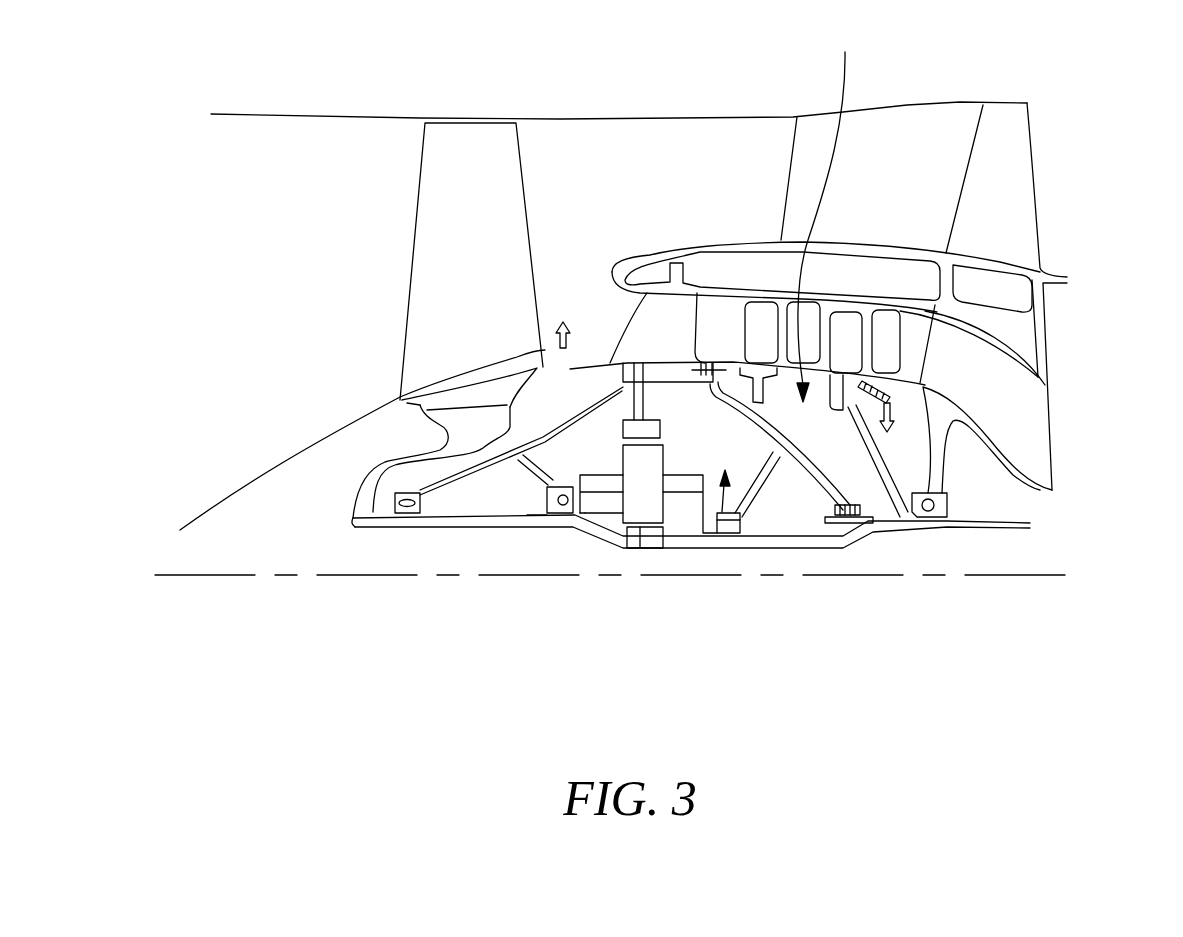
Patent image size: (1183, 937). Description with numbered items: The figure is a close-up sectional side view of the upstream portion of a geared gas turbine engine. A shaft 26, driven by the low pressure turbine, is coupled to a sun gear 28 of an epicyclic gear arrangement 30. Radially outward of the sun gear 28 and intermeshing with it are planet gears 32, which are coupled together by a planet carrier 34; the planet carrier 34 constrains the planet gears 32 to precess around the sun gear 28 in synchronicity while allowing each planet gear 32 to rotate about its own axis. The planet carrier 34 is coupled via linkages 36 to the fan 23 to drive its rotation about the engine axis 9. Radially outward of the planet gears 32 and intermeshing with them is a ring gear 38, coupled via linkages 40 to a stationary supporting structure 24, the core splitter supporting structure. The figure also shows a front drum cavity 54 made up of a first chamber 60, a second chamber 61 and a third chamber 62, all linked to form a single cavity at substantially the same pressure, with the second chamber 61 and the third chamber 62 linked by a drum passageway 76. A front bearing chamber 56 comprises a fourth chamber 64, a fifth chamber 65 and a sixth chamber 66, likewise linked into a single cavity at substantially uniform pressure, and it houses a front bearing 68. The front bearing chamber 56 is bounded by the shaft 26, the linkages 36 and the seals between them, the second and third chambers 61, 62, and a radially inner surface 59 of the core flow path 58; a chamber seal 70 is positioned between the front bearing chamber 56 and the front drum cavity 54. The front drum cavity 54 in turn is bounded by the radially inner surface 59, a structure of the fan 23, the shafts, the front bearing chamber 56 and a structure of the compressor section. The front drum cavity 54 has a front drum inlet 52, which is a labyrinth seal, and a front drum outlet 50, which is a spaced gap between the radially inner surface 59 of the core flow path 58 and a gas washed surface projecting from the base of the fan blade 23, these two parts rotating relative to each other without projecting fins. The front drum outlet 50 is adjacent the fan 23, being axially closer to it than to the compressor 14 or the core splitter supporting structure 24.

The engine axis 9 is at (230, 576).
The compressor 14 is at (843, 327).
The fan 23 is at (420, 253).
The stationary supporting structure 24 is at (650, 323).
The shaft 26 is at (800, 560).
The sun gear 28 is at (650, 537).
The epicyclic gear arrangement 30 is at (607, 527).
The planet gears 32 is at (622, 528).
The planet carrier 34 is at (683, 520).
The linkages 36 is at (580, 513).
The ring gear 38 is at (623, 432).
The linkages 40 is at (647, 398).
The front drum outlet 50 is at (570, 369).
The front drum inlet 52 is at (893, 387).
The front drum cavity 54 is at (820, 219).
The front bearing chamber 56 is at (726, 533).
The core flow path 58 is at (998, 415).
The radially inner surface 59 is at (587, 365).
The first chamber 60 is at (912, 475).
The second chamber 61 is at (877, 490).
The third chamber 62 is at (403, 483).
The fourth chamber 64 is at (438, 505).
The fifth chamber 65 is at (550, 510).
The sixth chamber 66 is at (767, 537).
The front bearing 68 is at (527, 520).
The chamber seal 70 is at (840, 523).
The drum passageway 76 is at (678, 383).